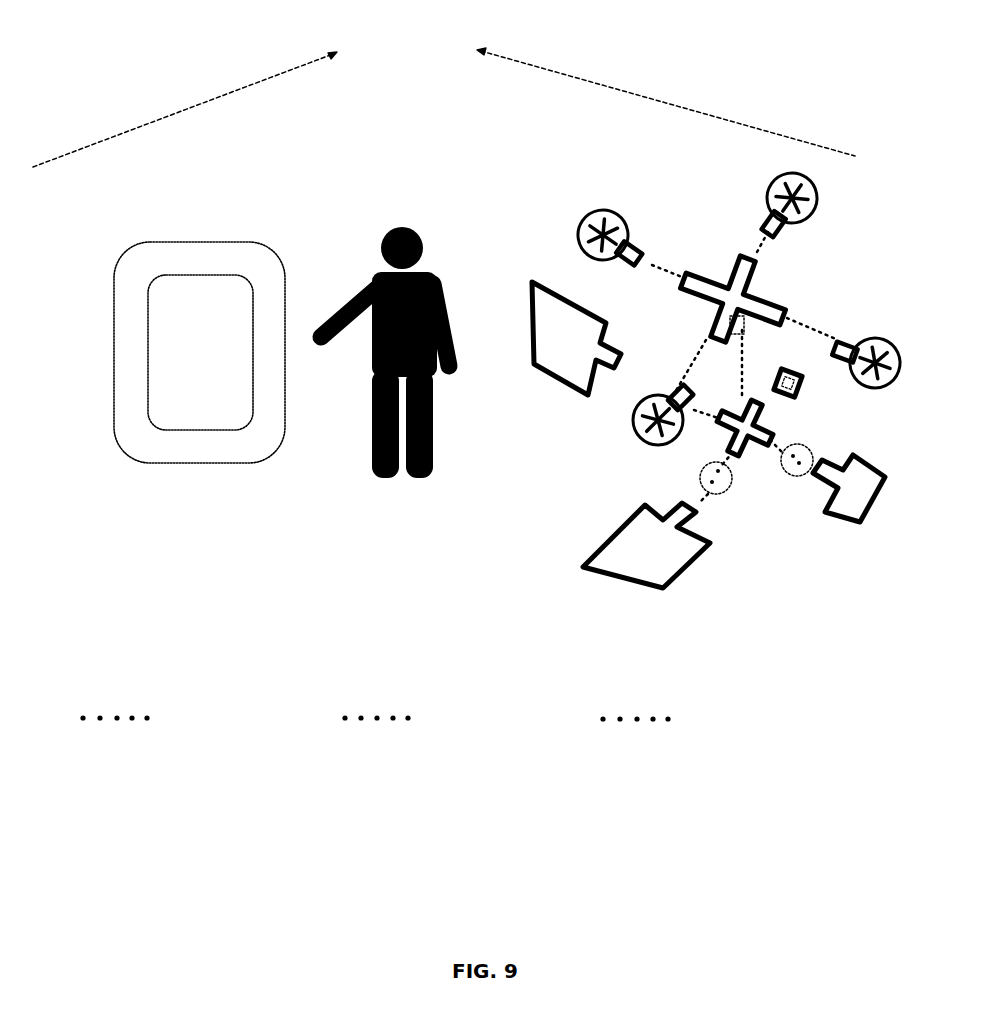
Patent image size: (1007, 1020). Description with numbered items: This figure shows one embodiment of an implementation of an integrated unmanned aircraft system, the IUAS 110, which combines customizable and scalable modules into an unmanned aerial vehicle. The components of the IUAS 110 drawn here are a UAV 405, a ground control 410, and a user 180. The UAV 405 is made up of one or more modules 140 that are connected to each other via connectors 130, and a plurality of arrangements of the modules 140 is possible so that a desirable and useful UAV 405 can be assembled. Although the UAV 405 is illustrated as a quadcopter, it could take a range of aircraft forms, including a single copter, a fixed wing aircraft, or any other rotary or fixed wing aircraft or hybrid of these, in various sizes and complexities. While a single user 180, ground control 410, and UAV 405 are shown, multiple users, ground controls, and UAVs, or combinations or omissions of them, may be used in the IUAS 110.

The IUAS 110 is at (444, 93).
The UAV 405 is at (538, 240).
The modules 140 is at (656, 395).
The connectors 130 is at (790, 469).
The ground control 410 is at (102, 462).
The user 180 is at (392, 502).